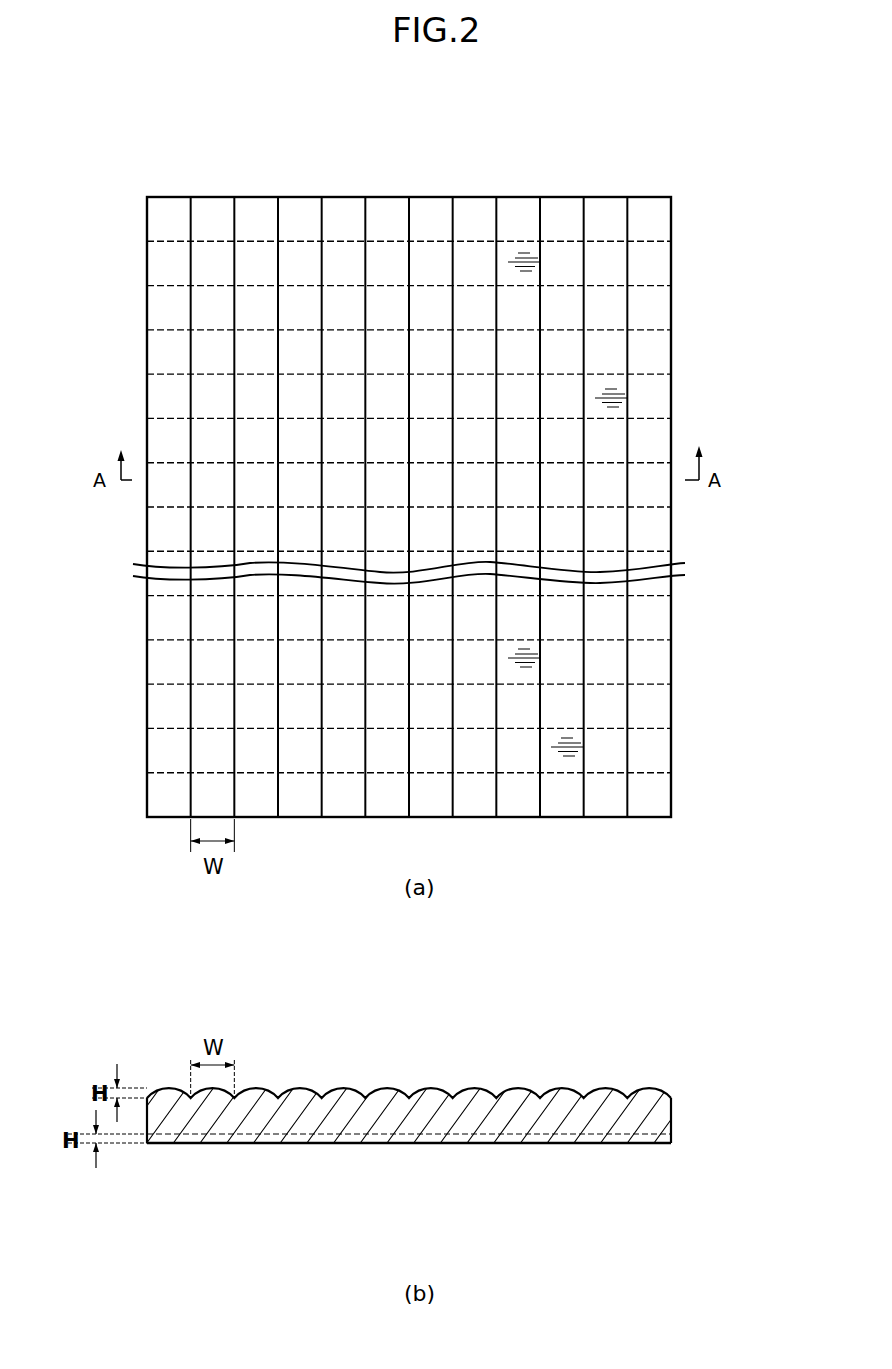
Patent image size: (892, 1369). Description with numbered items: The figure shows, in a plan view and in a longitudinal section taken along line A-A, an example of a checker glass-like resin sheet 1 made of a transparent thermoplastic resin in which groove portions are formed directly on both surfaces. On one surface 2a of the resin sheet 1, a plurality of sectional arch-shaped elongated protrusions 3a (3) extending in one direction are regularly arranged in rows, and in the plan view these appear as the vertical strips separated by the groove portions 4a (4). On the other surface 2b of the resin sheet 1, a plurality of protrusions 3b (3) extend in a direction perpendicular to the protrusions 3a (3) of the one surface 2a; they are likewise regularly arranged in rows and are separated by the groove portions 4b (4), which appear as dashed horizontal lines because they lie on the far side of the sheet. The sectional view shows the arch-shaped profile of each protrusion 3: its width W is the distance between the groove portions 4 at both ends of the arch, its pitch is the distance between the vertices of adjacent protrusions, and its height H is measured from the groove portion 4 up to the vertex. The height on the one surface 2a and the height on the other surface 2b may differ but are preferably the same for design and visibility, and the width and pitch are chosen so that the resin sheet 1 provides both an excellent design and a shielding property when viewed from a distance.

The resin sheet 1 is at (665, 174).
The one surface 2a is at (653, 271).
The other surface 2b is at (652, 668).
The protrusion 3 is at (477, 753).
The protrusions on one surface 3a is at (648, 348).
The protrusions on other surface 3b is at (653, 748).
The groove portion 4 is at (471, 727).
The groove portion on one surface 4a is at (630, 226).
The groove portion on other surface 4b is at (637, 773).